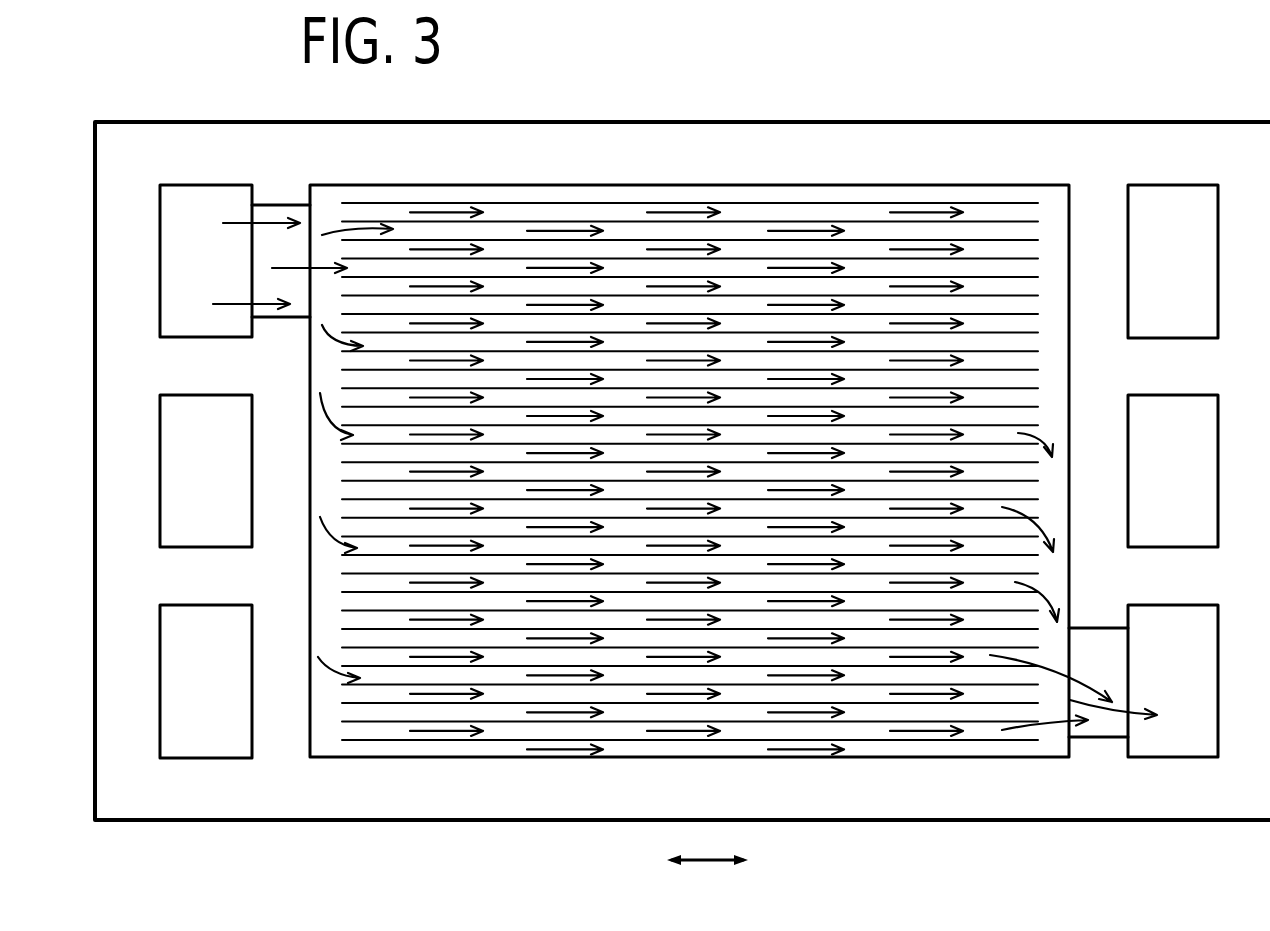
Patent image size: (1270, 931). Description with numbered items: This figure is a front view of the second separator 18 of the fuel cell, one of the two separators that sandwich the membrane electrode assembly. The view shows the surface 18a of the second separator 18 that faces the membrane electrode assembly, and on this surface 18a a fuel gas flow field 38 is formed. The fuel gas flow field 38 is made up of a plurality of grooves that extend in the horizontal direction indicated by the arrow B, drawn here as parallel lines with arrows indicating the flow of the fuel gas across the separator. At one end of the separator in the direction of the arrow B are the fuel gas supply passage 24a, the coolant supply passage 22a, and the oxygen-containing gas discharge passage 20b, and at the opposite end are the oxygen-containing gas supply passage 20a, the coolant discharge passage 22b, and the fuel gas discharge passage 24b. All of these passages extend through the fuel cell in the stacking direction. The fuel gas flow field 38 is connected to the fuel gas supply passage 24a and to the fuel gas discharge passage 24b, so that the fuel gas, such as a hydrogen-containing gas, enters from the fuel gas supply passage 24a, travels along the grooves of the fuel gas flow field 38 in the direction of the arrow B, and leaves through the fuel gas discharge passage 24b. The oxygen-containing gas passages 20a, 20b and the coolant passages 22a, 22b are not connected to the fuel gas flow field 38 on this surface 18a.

The second separator 18 is at (1136, 80).
The surface 18a is at (930, 150).
The fuel gas flow field 38 is at (690, 212).
The fuel gas supply passage 24a is at (253, 261).
The fuel gas discharge passage 24b is at (1143, 681).
The oxygen-containing gas supply passage 20a is at (1173, 261).
The oxygen-containing gas discharge passage 20b is at (206, 681).
The coolant supply passage 22a is at (206, 471).
The coolant discharge passage 22b is at (1173, 471).